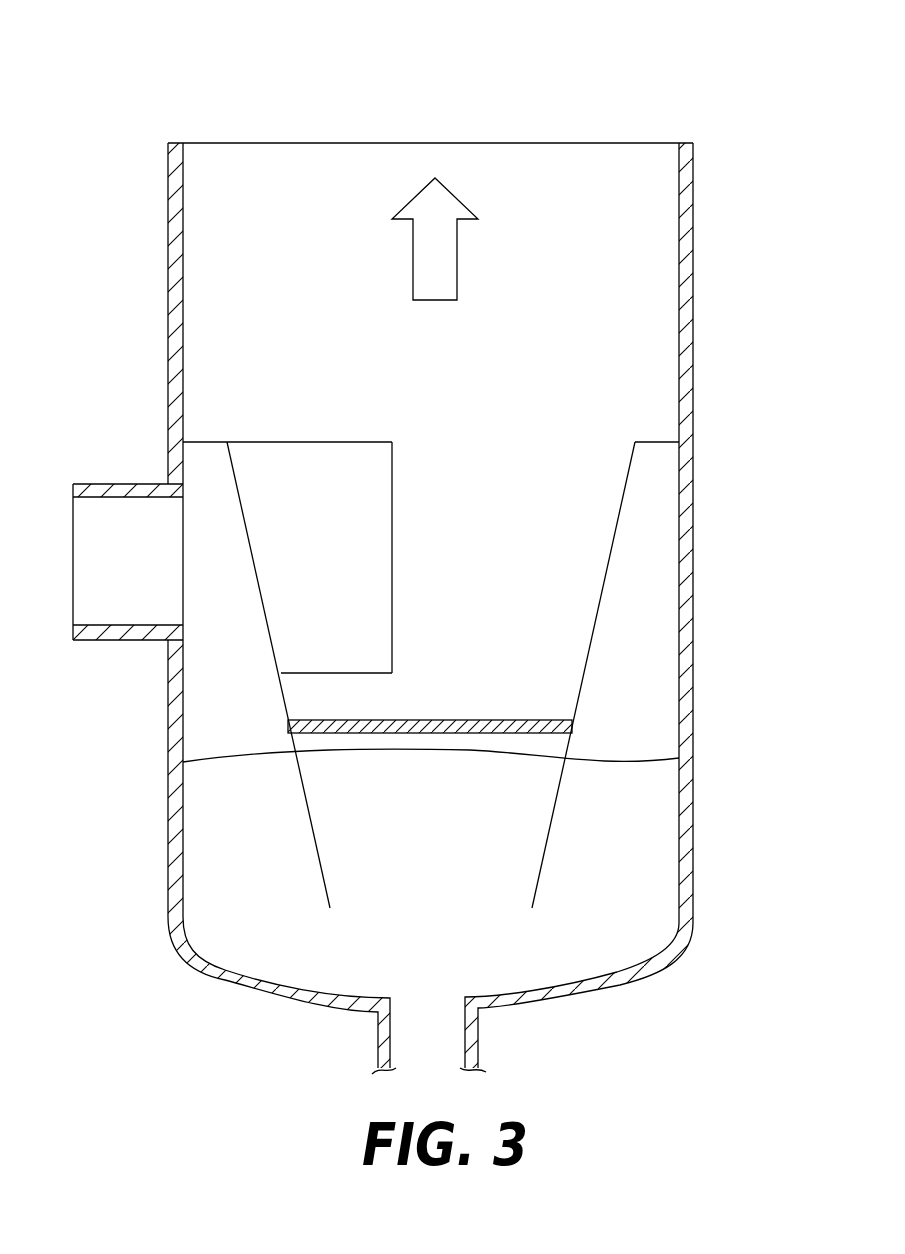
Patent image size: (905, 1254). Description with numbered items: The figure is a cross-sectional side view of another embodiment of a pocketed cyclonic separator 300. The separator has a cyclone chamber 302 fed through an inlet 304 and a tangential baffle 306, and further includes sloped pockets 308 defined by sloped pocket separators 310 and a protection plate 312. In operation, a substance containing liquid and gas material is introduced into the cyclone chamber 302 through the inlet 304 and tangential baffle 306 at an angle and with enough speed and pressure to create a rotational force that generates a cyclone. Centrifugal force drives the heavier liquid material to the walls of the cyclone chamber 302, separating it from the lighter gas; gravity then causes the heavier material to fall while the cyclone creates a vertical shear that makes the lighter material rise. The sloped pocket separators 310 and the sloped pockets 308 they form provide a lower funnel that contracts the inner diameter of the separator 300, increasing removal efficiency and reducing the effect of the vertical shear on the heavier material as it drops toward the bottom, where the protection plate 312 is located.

The pocketed cyclonic separator 300 is at (80, 177).
The cyclone chamber 302 is at (652, 320).
The inlet 304 is at (73, 543).
The tangential baffle 306 is at (310, 442).
The sloped pocket 308 is at (578, 492).
The sloped pocket separator 310 is at (593, 633).
The protection plate 312 is at (540, 718).